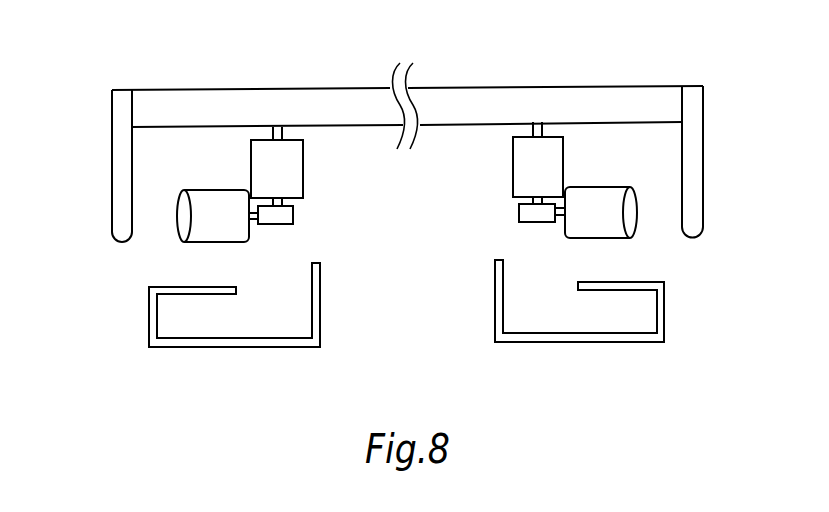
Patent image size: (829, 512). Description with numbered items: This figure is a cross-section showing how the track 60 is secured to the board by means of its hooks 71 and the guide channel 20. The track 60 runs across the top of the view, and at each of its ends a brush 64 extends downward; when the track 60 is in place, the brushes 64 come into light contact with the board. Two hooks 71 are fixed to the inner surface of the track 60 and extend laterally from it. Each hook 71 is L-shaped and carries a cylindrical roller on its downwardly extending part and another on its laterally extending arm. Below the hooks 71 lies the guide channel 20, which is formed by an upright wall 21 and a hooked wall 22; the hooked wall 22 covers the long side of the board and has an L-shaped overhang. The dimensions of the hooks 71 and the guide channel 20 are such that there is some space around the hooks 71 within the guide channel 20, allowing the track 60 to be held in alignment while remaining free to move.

The track 60 is at (192, 100).
The brushes 64 is at (122, 157).
The hooks 71 is at (520, 174).
The hooked wall 22 is at (149, 313).
The upright wall 21 is at (308, 317).
The guide channel 20 is at (618, 311).